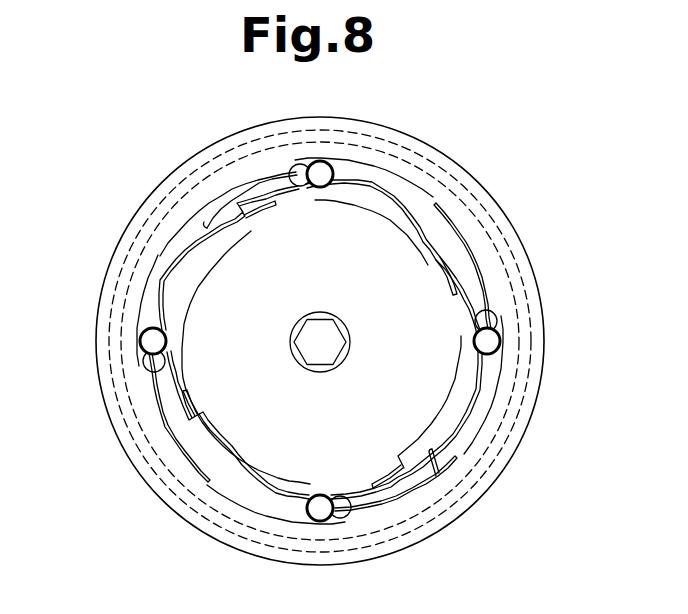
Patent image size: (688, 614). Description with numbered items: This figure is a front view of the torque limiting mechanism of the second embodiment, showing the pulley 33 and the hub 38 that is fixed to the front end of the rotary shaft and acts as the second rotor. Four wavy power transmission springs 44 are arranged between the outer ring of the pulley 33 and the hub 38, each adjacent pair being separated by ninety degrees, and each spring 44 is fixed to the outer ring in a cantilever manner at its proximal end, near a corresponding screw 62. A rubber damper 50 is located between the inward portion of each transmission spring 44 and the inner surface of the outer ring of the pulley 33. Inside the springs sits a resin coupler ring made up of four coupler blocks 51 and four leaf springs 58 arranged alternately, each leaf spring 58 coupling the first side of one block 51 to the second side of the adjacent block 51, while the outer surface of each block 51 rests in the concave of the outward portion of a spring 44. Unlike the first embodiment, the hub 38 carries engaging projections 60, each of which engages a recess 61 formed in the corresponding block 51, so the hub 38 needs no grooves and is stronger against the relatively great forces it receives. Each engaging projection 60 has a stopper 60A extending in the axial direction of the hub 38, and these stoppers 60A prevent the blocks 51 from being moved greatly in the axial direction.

The pulley 33 is at (423, 140).
The hub 38 is at (497, 436).
The power transmission spring 44 is at (207, 232).
The rubber damper 50 is at (302, 162).
The coupler block 51 is at (283, 162).
The leaf spring 58 is at (380, 165).
The engaging projection 60 is at (250, 150).
The stopper 60A is at (232, 133).
The recess 61 is at (265, 205).
The screw 62 is at (320, 160).